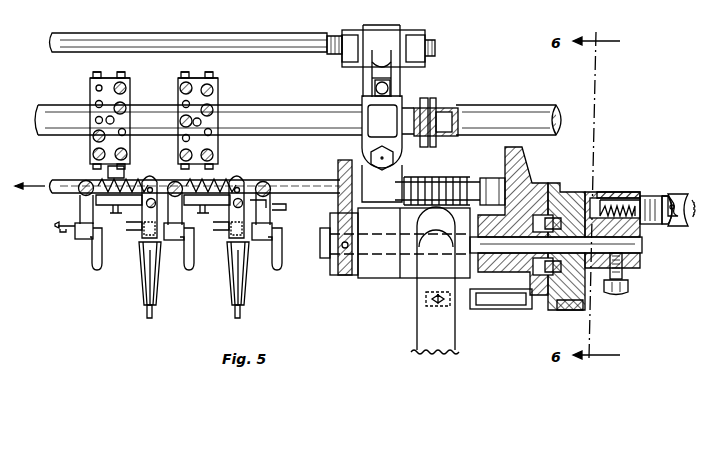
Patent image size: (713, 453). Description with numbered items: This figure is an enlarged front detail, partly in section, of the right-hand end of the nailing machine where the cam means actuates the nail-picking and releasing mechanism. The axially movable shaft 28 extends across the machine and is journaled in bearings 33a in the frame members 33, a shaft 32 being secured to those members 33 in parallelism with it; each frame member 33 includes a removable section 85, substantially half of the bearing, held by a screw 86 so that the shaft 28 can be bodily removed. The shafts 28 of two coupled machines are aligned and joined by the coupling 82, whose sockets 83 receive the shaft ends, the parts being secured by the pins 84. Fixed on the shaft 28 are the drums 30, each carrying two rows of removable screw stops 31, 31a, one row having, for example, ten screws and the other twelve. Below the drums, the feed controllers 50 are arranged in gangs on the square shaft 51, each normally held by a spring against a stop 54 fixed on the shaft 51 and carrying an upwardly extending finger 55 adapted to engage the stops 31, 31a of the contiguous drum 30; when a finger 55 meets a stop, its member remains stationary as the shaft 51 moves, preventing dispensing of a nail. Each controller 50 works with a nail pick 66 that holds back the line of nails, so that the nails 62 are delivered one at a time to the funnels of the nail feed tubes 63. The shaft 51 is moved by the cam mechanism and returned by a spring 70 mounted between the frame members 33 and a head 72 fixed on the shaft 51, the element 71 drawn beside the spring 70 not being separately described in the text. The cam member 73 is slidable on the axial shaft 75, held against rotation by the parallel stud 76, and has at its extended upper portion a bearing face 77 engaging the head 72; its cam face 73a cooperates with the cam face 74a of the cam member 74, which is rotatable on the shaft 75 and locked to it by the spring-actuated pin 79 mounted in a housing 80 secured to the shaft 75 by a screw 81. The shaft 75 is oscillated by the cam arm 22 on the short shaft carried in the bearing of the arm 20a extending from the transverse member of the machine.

The shaft 32 is at (112, 40).
The frame members 33 is at (378, 44).
The bearings 33a is at (400, 106).
The removable section 85 is at (372, 80).
The screw 86 is at (375, 91).
The shaft 28 is at (268, 108).
The coupling 82 is at (482, 108).
The sockets 83 is at (442, 112).
The pins 84 is at (427, 98).
The drums 30 is at (92, 92).
The stops 31 is at (92, 74).
The stops 31a is at (126, 67).
The square shaft 51 is at (66, 193).
The stop 54 is at (108, 169).
The finger 55 is at (136, 176).
The feed controllers 50 is at (169, 183).
The nail pick 66 is at (62, 230).
The nails 62 is at (145, 258).
The nail feed tubes 63 is at (153, 315).
The cam arm 22 is at (340, 167).
The arm 20a is at (418, 319).
The rod 71 is at (411, 183).
The spring 70 is at (438, 176).
The head 72 is at (488, 178).
The bearing face 77 is at (506, 150).
The cam member 73 is at (525, 189).
The cam face 73a is at (548, 215).
The cam face 74a is at (590, 191).
The cam member 74 is at (596, 199).
The axial shaft 75 is at (645, 247).
The spring-actuated pin 79 is at (629, 198).
The housing 80 is at (641, 231).
The screw 81 is at (628, 287).
The stud 76 is at (497, 309).